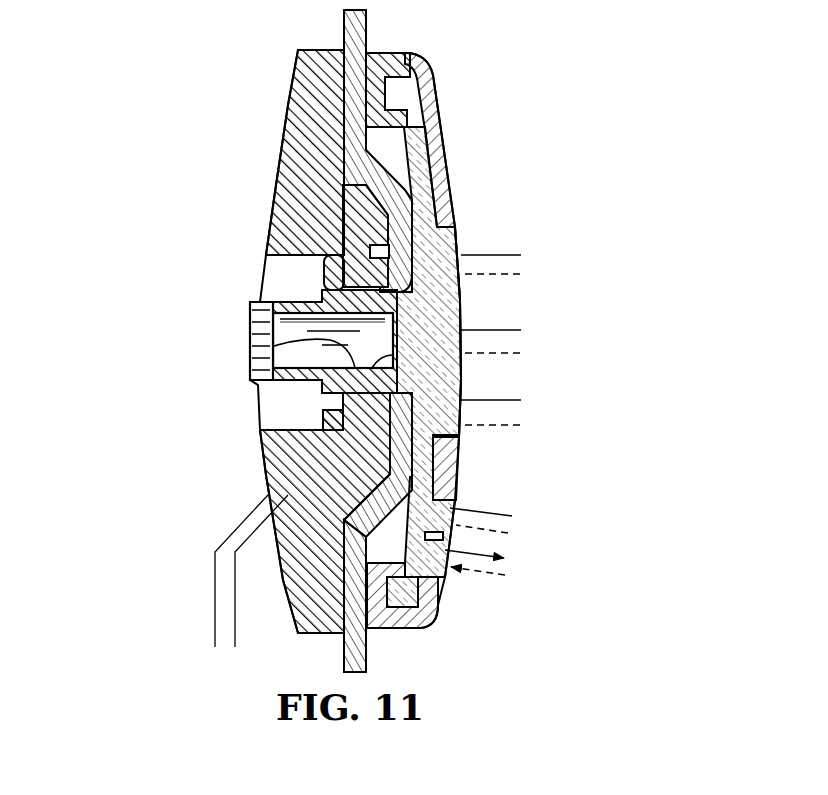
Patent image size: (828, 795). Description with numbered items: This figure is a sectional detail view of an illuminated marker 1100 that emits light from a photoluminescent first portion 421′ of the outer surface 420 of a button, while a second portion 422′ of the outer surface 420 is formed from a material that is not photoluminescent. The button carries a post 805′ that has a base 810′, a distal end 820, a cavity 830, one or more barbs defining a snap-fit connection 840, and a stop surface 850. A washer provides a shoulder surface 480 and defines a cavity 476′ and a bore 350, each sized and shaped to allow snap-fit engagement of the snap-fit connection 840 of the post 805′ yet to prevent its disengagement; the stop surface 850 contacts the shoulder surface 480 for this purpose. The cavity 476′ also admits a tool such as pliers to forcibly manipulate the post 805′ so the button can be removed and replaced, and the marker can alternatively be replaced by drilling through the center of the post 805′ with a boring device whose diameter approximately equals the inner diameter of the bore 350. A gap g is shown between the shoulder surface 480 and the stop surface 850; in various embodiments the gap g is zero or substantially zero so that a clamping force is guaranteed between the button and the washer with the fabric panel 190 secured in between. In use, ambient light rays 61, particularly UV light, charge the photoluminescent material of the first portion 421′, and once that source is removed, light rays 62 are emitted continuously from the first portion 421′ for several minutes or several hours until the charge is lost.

The illuminated marker 1100 is at (602, 397).
The fabric panel 190 is at (372, 657).
The shoulder surface 480 is at (335, 270).
The snap-fit connection 840 is at (325, 292).
The cavity 830 is at (293, 341).
The bore 350 is at (290, 352).
The distal end 820 is at (251, 332).
The post 805′ is at (323, 394).
The cavity 476′ is at (330, 412).
The stop surface 850 is at (463, 290).
The base 810′ is at (463, 363).
The outer surface 420 is at (452, 133).
The first portion 421′ is at (457, 245).
The second portion 422′ is at (458, 480).
The light rays 62 is at (507, 252).
The light rays 61 is at (520, 274).
The gap g is at (258, 627).